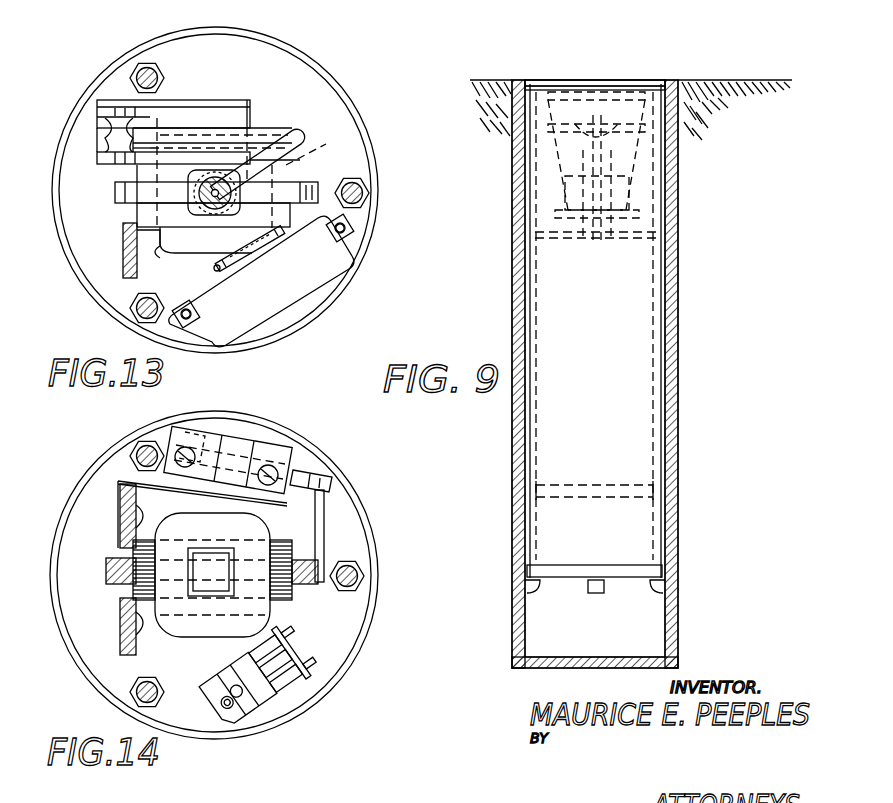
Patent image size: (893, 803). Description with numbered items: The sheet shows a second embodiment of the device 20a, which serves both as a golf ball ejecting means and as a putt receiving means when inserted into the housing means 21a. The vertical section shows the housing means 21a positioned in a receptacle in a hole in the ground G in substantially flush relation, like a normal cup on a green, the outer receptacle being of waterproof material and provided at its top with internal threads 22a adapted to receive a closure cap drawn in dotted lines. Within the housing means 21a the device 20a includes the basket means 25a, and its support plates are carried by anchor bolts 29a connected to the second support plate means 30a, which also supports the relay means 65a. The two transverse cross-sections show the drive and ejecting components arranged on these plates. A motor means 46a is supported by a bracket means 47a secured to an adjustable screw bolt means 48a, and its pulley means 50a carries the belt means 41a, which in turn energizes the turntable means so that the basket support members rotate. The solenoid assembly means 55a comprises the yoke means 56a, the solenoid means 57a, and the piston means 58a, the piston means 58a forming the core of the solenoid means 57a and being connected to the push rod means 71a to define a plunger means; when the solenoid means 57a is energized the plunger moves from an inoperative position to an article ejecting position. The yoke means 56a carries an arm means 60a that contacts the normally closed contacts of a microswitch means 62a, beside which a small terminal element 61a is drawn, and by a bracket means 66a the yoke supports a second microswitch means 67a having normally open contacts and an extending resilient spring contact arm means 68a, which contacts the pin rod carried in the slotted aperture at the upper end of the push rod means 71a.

In FIG. 9, the ground G is at (736, 78).
In FIG. 9, the device 20a is at (634, 272).
In FIG. 9, the housing means 21a is at (680, 330).
In FIG. 9, the internal threads 22a is at (533, 81).
In FIG. 9, the basket means 25a is at (615, 95).
In FIG. 13, the anchor bolts 29a is at (165, 67).
In FIG. 14, the anchor bolts 29a is at (136, 452).
In FIG. 13, the second support plate means 30a is at (324, 94).
In FIG. 14, the second support plate means 30a is at (350, 546).
In FIG. 13, the belt means 41a is at (217, 271).
In FIG. 13, the motor means 46a is at (320, 285).
In FIG. 13, the bracket means 47a is at (342, 258).
In FIG. 13, the adjustable screw bolt means 48a is at (330, 240).
In FIG. 13, the pulley means 50a is at (217, 255).
In FIG. 13, the solenoid assembly means 55a is at (128, 210).
In FIG. 14, the solenoid assembly means 55a is at (122, 584).
In FIG. 13, the yoke means 56a is at (118, 193).
In FIG. 14, the yoke means 56a is at (110, 560).
In FIG. 13, the solenoid means 57a is at (300, 162).
In FIG. 14, the solenoid means 57a is at (187, 634).
In FIG. 14, the piston means 58a is at (205, 558).
In FIG. 14, the arm means 60a is at (322, 548).
In FIG. 14, the terminal block 61a is at (326, 470).
In FIG. 14, the microswitch means 62a is at (264, 450).
In FIG. 14, the relay means 65a is at (224, 705).
In FIG. 13, the bracket means 66a is at (186, 100).
In FIG. 13, the second microswitch means 67a is at (226, 122).
In FIG. 13, the resilient spring contact arm means 68a is at (288, 128).
In FIG. 13, the push rod means 71a is at (236, 219).